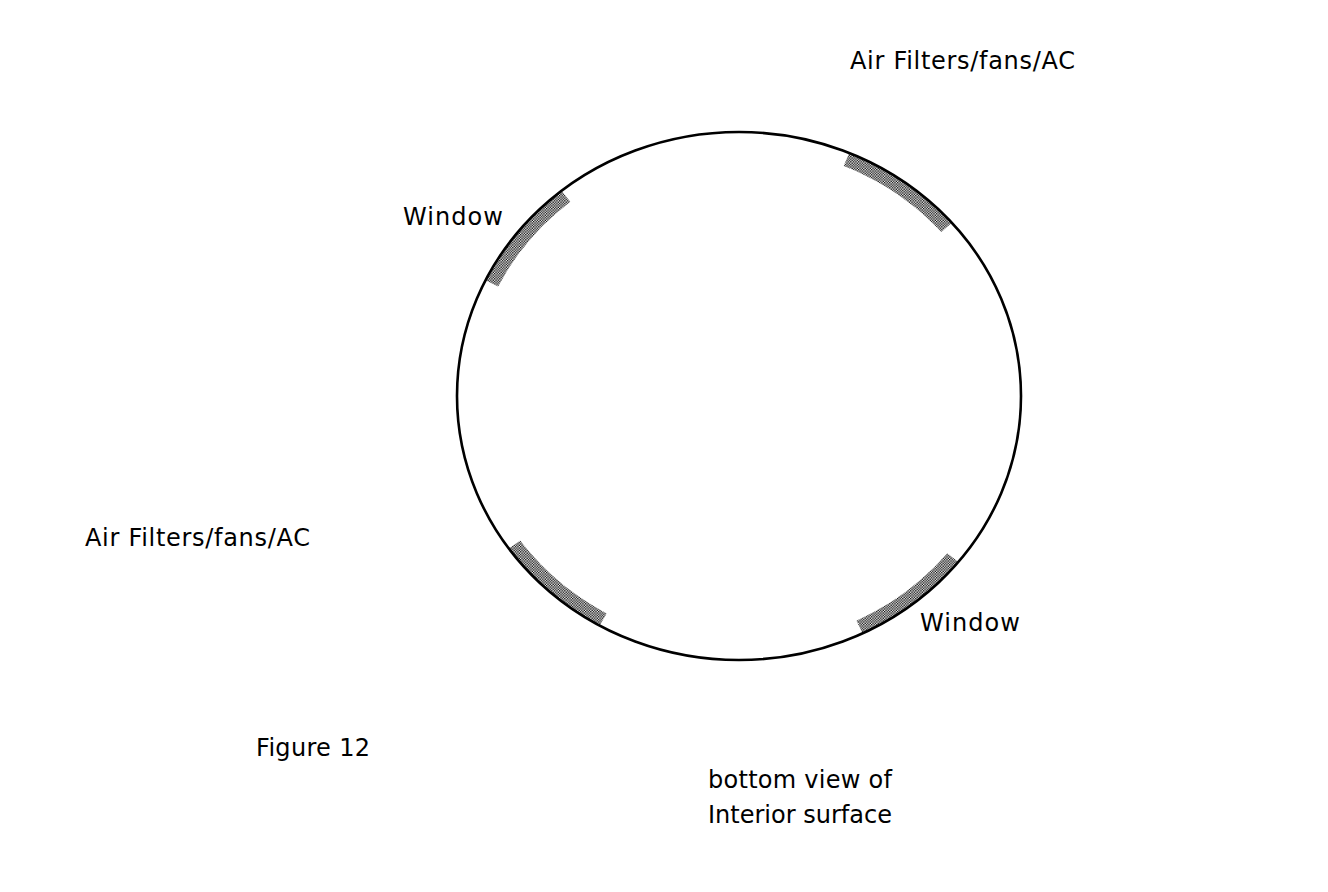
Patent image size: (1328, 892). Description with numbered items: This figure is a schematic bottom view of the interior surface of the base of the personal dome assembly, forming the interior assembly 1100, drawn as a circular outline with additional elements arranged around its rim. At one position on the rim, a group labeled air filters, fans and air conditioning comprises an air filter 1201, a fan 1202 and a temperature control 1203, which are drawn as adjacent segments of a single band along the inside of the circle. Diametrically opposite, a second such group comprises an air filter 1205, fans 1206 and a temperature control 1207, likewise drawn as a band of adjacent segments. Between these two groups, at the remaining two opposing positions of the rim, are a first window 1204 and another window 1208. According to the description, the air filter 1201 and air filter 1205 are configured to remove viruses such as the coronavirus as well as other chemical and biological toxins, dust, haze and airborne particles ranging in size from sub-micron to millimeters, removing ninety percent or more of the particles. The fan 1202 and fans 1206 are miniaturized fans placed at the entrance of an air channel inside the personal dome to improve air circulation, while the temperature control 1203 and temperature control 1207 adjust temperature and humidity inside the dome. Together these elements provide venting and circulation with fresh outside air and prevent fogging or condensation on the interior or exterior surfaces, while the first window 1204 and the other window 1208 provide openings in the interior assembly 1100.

The interior assembly 1100 is at (1229, 155).
The air filter 1201 is at (930, 212).
The fan 1202 is at (898, 180).
The temperature control 1203 is at (872, 158).
The first window 1204 is at (537, 202).
The air filter 1205 is at (520, 572).
The fans 1206 is at (550, 595).
The temperature control 1207 is at (580, 625).
The another window 1208 is at (930, 570).